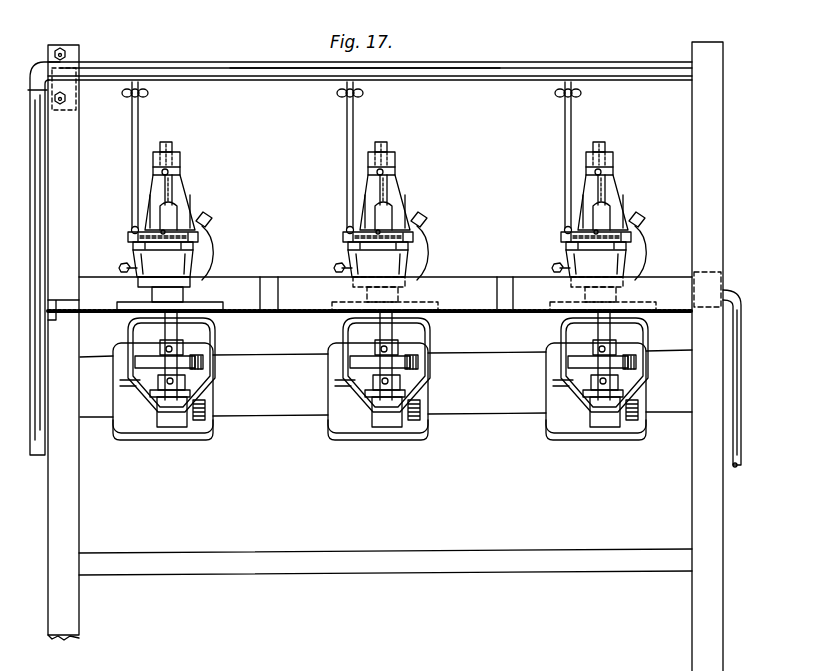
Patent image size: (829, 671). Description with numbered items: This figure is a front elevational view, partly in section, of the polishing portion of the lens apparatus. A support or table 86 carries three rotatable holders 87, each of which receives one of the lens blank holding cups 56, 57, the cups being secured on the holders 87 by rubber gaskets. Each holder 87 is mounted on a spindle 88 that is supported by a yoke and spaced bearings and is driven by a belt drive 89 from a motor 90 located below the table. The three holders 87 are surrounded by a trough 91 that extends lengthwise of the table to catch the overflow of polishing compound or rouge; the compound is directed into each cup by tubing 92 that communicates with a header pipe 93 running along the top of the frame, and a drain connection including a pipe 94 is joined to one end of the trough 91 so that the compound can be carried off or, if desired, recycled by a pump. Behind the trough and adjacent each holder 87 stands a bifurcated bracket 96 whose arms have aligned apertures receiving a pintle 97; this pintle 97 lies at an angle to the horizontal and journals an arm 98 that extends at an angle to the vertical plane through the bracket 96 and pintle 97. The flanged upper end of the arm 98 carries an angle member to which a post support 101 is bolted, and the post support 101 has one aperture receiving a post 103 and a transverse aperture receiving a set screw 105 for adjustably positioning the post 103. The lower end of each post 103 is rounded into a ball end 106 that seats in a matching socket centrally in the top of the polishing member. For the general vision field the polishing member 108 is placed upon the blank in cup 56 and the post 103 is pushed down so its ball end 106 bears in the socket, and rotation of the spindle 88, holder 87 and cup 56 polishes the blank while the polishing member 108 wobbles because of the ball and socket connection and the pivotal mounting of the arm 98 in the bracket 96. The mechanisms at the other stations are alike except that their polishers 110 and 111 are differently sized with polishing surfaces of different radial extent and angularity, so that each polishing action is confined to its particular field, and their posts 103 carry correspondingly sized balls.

The lens blank holding cup 56 is at (210, 235).
The lens blank holding cup 57 is at (548, 246).
The support or table 86 is at (262, 312).
The rotatable holder 87 is at (208, 270).
The spindle 88 is at (190, 442).
The belt drive 89 is at (138, 365).
The motor 90 is at (126, 436).
The trough 91 is at (250, 281).
The tubing 92 is at (131, 172).
The header pipe 93 is at (233, 80).
The drain pipe 94 is at (738, 467).
The bracket 96 is at (202, 226).
The pintle 97 is at (121, 267).
The arm 98 is at (183, 186).
The post support 101 is at (181, 167).
The post 103 is at (192, 139).
The set screw 105 is at (168, 163).
The ball end 106 is at (148, 232).
The polishing member 108 is at (178, 215).
The polisher 110 is at (626, 202).
The polisher 111 is at (410, 202).